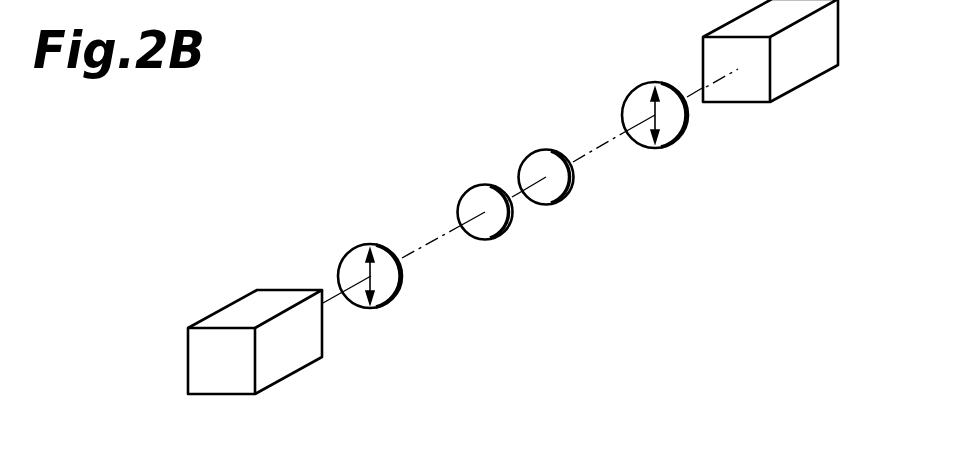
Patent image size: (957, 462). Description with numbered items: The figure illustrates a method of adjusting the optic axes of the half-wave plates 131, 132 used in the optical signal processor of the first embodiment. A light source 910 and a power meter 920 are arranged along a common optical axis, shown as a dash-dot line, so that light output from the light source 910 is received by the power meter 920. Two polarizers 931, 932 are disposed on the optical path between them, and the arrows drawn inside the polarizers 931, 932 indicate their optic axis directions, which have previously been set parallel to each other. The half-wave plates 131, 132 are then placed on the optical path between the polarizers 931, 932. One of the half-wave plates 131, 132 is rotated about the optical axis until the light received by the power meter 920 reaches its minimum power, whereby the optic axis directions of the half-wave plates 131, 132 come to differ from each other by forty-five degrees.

The light source 910 is at (298, 370).
The polarizer 931 is at (380, 310).
The half-wave plate 131 is at (487, 238).
The half-wave plate 132 is at (557, 205).
The polarizer 932 is at (662, 152).
The power meter 920 is at (793, 90).